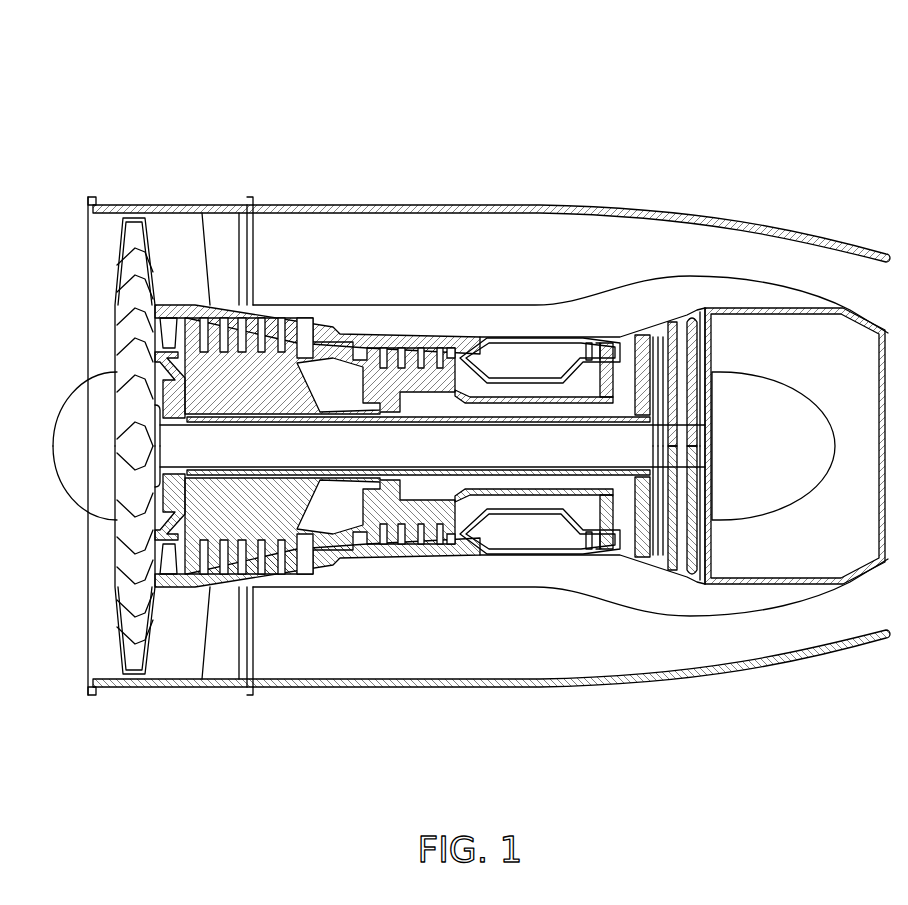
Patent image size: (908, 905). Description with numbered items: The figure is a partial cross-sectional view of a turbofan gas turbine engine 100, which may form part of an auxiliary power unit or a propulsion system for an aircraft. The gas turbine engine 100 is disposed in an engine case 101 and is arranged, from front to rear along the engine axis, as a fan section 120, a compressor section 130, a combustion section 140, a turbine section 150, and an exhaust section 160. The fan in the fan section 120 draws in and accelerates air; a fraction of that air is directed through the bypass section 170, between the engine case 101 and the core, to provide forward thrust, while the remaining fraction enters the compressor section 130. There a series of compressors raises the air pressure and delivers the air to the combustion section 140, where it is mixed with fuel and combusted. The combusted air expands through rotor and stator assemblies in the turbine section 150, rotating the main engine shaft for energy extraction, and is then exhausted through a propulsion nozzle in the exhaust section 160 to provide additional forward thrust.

The gas turbine engine 100 is at (307, 110).
The engine case 101 is at (313, 204).
The bypass section 170 is at (417, 230).
The fan section 120 is at (167, 720).
The compressor section 130 is at (167, 720).
The combustion section 140 is at (408, 720).
The turbine section 150 is at (563, 720).
The exhaust section 160 is at (715, 720).